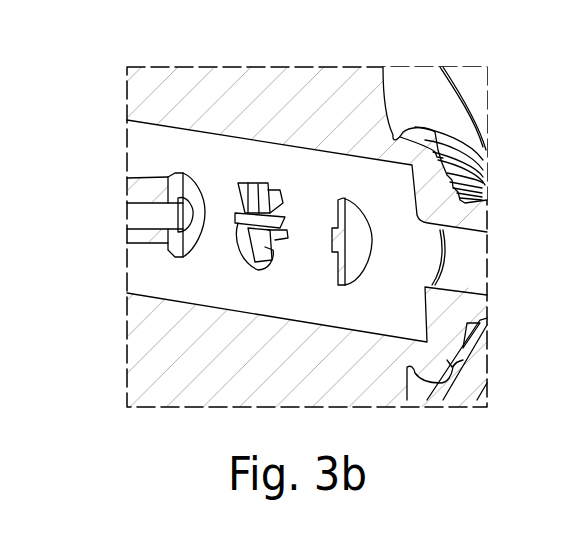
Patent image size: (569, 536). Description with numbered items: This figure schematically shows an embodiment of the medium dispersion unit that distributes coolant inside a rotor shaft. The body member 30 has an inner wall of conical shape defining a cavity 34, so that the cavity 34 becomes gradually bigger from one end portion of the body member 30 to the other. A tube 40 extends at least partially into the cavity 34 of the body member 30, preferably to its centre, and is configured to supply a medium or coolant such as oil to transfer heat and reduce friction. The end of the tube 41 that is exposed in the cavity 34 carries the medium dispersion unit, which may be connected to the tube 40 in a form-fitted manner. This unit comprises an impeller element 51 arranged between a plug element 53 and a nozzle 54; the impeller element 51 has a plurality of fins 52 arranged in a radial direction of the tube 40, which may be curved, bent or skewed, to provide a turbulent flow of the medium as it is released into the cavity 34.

The body member 30 is at (240, 377).
The cavity 34 is at (368, 185).
The tube 40 is at (142, 232).
The end of the tube 41 is at (190, 177).
The impeller element 51 is at (257, 183).
The fins 52 is at (280, 257).
The plug element 53 is at (358, 242).
The nozzle 54 is at (244, 243).